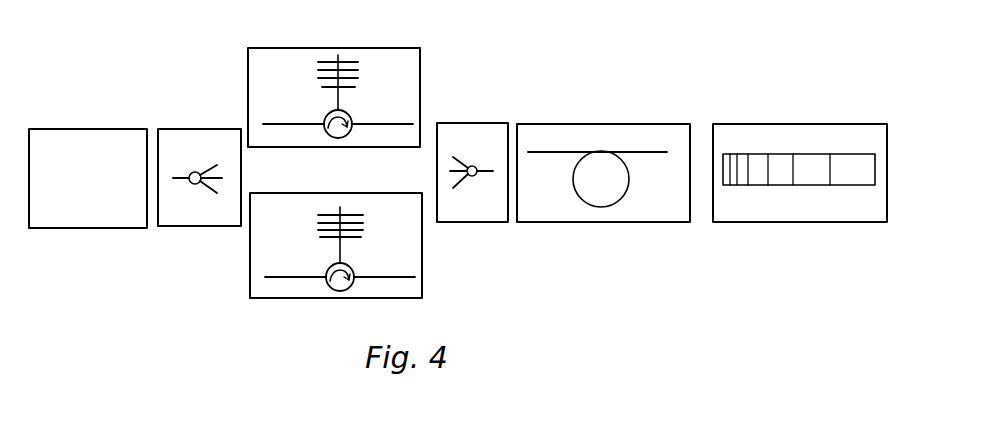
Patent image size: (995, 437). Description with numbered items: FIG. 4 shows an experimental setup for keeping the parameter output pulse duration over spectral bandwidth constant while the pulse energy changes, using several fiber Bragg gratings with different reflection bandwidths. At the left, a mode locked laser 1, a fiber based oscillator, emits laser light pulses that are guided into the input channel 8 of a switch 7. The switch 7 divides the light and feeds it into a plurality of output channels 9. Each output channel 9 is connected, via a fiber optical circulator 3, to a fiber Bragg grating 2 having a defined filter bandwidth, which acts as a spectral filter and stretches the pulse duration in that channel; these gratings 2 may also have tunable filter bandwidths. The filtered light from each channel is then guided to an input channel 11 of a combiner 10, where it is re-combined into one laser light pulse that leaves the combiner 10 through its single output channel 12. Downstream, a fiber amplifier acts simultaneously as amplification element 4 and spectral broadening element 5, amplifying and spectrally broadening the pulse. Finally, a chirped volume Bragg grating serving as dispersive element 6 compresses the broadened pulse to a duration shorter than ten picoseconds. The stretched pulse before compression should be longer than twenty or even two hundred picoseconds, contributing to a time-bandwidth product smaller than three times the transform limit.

The mode locked laser 1 is at (106, 152).
The fiber Bragg grating 2 is at (353, 72).
The fiber optical circulator 3 is at (352, 118).
The amplification element 4 is at (612, 169).
The spectral broadening element 5 is at (612, 169).
The dispersive element 6 is at (792, 172).
The switch 7 is at (168, 152).
The input channel 8 is at (189, 174).
The output channels 9 is at (213, 167).
The combiner 10 is at (517, 160).
The input channels 11 is at (458, 158).
The output channel 12 is at (482, 207).